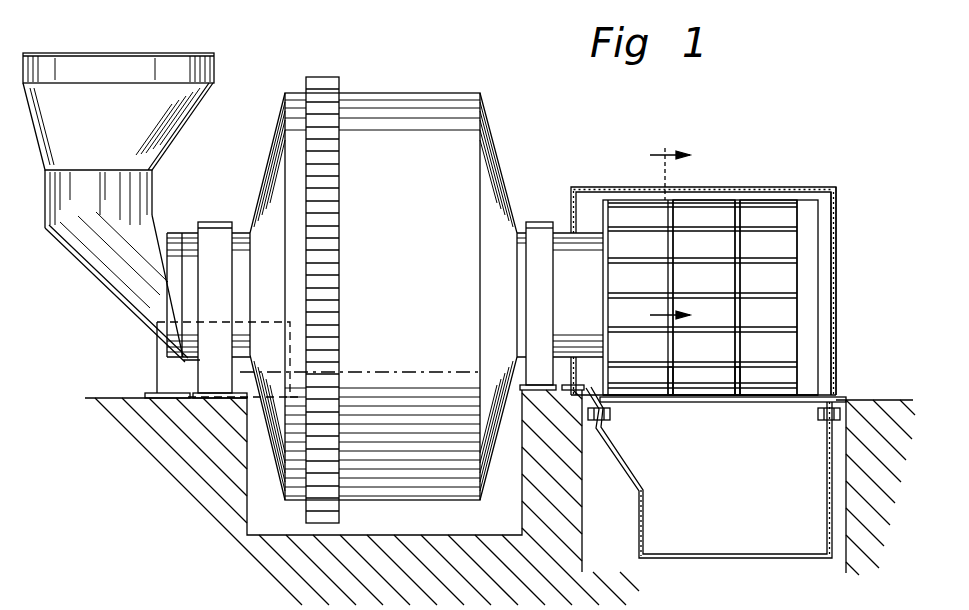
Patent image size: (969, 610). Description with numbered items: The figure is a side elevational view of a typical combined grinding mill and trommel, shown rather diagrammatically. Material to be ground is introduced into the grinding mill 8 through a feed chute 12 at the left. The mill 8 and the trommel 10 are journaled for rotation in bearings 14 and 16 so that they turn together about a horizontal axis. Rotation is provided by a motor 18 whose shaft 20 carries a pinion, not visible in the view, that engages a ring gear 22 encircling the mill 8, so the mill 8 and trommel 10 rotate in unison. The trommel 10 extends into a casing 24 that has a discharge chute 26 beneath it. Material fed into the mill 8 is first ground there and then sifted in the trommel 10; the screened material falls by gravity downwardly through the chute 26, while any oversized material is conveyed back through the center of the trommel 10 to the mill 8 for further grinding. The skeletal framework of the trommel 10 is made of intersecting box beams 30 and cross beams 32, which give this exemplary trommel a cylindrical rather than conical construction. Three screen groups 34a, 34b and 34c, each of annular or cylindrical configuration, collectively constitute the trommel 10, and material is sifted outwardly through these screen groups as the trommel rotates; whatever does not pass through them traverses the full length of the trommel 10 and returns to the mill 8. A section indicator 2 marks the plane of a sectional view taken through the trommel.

The grinding mill 8 is at (470, 93).
The trommel 10 is at (818, 258).
The feed chute 12 is at (100, 283).
The bearing 14 is at (213, 222).
The bearing 16 is at (543, 222).
The motor 18 is at (156, 372).
The motor's shaft 20 is at (300, 323).
The ring gear 22 is at (339, 80).
The casing 24 is at (836, 325).
The discharge chute 26 is at (825, 530).
The box beams 30 is at (735, 402).
The cross beams 32 is at (730, 372).
The screen group 34a is at (635, 215).
The screen group 34b is at (710, 222).
The screen group 34c is at (778, 222).
The section line 2- 2 is at (678, 238).